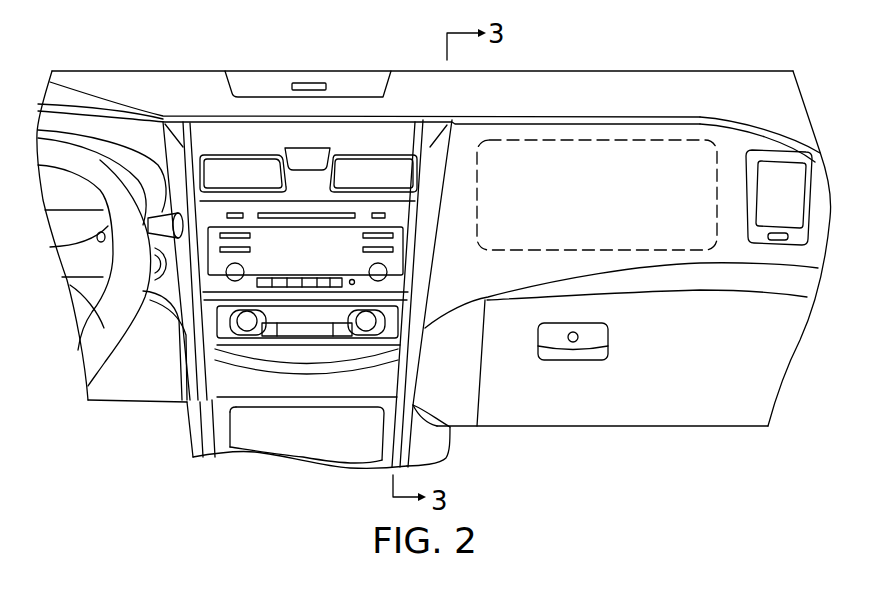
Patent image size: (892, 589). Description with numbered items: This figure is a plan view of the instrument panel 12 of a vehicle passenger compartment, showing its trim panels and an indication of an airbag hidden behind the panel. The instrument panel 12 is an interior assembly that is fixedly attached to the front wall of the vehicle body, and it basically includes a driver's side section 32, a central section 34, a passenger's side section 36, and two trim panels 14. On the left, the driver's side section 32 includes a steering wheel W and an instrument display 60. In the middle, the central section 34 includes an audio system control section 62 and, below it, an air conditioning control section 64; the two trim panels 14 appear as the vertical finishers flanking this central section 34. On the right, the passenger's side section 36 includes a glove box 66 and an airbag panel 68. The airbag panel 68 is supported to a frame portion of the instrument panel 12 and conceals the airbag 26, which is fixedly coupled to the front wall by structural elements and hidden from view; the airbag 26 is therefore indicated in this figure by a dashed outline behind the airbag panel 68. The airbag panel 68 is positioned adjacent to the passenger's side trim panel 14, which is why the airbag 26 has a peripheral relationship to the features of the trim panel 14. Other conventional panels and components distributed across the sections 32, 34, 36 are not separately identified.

The instrument panel 12 is at (160, 62).
The driver's side section 32 is at (93, 92).
The instrument display 60 is at (120, 163).
The steering wheel W is at (120, 336).
The trim panel 14 is at (183, 180).
The central section 34 is at (398, 133).
The audio system control section 62 is at (313, 253).
The air conditioning control section 64 is at (335, 350).
The airbag 26 is at (572, 172).
The airbag panel 68 is at (597, 165).
The passenger's side section 36 is at (712, 86).
The glove box 66 is at (733, 353).